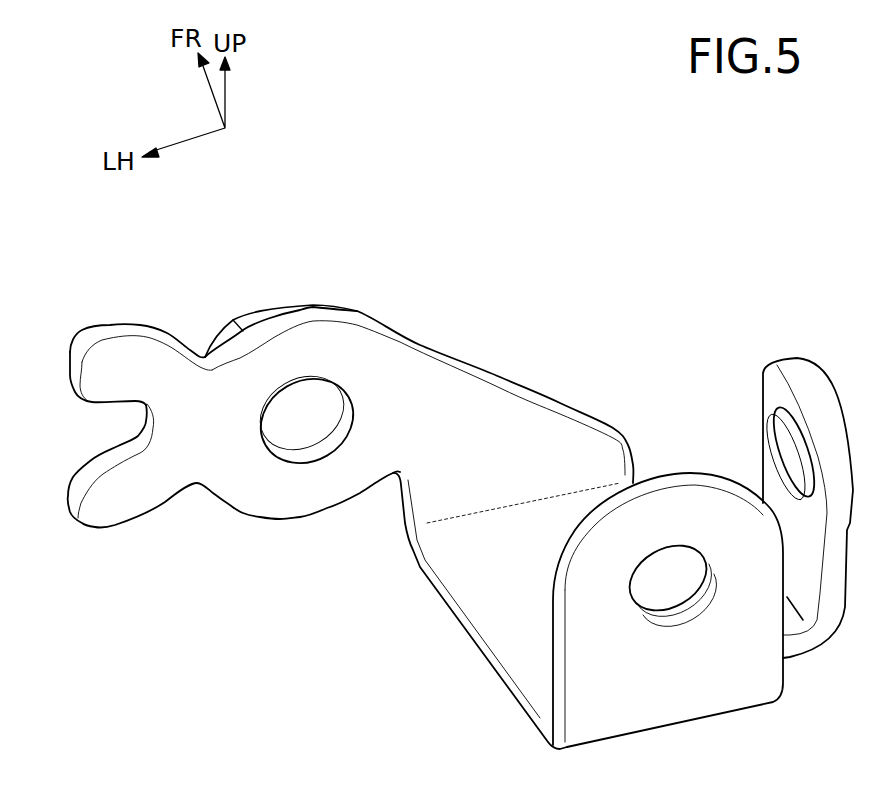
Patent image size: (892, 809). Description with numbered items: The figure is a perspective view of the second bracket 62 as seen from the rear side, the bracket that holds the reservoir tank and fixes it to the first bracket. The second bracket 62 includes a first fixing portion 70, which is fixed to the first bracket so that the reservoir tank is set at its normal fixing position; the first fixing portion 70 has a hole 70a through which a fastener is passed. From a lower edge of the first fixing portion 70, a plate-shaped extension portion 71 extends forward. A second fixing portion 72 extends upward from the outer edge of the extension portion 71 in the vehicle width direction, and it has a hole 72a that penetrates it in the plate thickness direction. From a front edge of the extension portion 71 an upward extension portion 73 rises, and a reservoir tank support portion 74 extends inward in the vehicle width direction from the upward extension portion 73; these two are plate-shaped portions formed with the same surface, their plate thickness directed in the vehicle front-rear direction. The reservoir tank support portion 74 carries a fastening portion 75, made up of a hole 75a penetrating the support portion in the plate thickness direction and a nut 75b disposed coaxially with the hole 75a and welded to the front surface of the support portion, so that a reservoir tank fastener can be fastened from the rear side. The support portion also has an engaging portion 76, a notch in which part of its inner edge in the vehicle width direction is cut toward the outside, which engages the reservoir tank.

The second bracket 62 is at (454, 189).
The first fixing portion 70 is at (688, 470).
The hole 70a is at (667, 565).
The extension portion 71 is at (503, 617).
The second fixing portion 72 is at (786, 358).
The hole 72a is at (790, 430).
The upward extension portion 73 is at (543, 397).
The reservoir tank support portion 74 is at (167, 334).
The fastening portion 75 is at (343, 206).
The hole 75a is at (309, 432).
The nut 75b is at (245, 320).
The engaging portion 76 is at (132, 429).